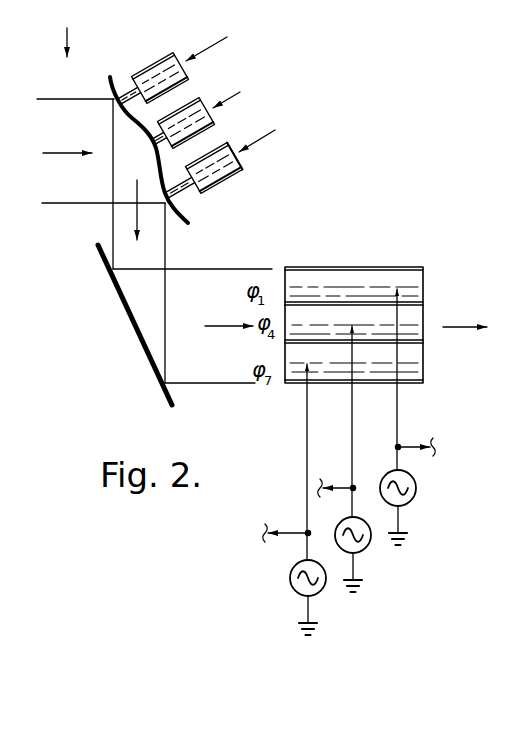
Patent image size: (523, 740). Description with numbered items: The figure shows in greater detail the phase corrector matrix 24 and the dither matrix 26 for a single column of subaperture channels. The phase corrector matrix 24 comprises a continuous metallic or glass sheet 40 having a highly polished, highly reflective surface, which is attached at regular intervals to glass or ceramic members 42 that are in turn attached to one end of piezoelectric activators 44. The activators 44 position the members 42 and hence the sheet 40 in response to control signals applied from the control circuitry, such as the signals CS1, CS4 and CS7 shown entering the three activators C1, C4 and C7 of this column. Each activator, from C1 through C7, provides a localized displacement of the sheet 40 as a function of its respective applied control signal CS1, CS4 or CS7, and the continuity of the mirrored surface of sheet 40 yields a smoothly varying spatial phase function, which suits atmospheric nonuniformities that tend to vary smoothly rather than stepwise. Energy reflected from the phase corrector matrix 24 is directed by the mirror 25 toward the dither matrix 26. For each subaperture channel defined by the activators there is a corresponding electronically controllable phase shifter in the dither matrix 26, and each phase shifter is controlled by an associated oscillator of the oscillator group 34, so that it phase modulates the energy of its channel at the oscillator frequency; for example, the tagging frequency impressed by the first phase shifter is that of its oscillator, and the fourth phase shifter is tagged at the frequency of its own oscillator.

The phase corrector matrix 24 is at (69, 31).
The continuous metallic or glass sheet 40 is at (110, 77).
The activator C1 is at (160, 55).
The activator C7 is at (227, 183).
The control signal CS1 is at (213, 46).
The control signal CS4 is at (232, 97).
The control signal CS7 is at (267, 137).
The glass or ceramic member 42 is at (180, 198).
The piezoelectric activator 44 is at (240, 170).
The mirror 25 is at (140, 347).
The dither matrix 26 is at (381, 258).
The oscillator sources 34 is at (268, 605).